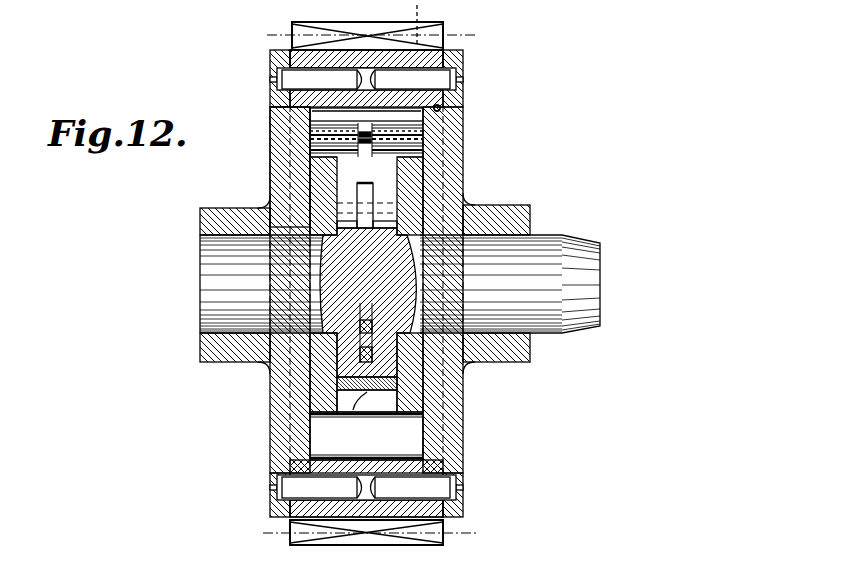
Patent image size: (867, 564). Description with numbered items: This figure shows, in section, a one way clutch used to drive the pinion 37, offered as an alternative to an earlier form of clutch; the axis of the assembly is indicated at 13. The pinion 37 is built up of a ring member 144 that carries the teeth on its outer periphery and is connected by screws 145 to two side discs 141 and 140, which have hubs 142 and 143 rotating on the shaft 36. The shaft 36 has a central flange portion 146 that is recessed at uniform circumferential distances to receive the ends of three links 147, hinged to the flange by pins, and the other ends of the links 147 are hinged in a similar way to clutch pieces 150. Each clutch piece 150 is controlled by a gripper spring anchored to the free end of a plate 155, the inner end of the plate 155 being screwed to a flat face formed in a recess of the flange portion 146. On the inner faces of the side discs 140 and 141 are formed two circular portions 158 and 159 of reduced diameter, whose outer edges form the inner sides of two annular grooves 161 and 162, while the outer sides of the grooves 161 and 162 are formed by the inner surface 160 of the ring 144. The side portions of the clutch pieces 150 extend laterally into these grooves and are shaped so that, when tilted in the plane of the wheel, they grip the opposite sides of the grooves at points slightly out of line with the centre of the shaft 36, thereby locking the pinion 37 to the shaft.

The axis line 13 is at (432, 22).
The shaft 36 is at (545, 245).
The pinion 37 is at (437, 27).
The side disc 140 is at (463, 137).
The side disc 141 is at (273, 150).
The hub 142 is at (247, 362).
The hub 143 is at (497, 362).
The ring member 144 is at (428, 60).
The screws 145 is at (292, 72).
The central flange portion 146 is at (412, 376).
The links 147 is at (387, 182).
The clutch pieces 150 is at (415, 116).
The plate 155 is at (423, 440).
The circular portion of reduced diameter 158 is at (407, 163).
The circular portion of reduced diameter 159 is at (320, 170).
The inner surface 160 is at (352, 109).
The annular groove 161 is at (441, 107).
The annular groove 162 is at (340, 128).